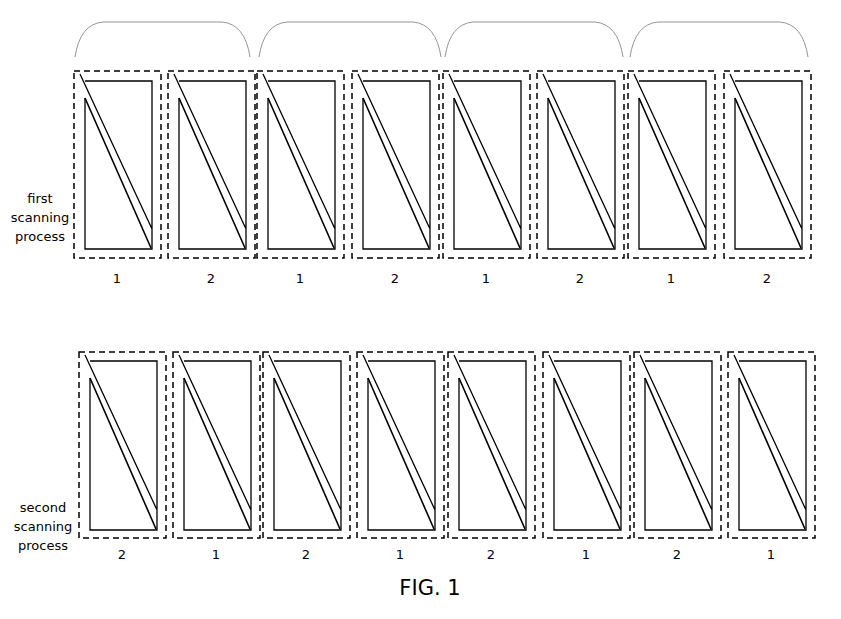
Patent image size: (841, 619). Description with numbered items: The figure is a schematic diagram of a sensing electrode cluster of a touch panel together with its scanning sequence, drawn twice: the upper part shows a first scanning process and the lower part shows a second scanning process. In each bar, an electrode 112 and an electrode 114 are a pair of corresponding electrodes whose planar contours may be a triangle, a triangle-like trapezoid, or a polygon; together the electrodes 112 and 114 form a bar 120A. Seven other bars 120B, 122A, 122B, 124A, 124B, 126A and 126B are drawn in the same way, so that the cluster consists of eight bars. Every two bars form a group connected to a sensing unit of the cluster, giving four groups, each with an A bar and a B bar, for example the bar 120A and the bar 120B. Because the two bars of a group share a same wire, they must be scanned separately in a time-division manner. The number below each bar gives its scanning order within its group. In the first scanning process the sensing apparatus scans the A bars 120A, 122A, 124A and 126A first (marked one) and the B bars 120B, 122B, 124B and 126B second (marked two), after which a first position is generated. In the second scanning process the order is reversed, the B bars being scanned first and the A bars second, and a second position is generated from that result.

The electrode 112 is at (80, 353).
The electrode 114 is at (90, 408).
The bar 120A is at (105, 352).
The bar 120B is at (199, 352).
The bar 122A is at (289, 352).
The bar 122B is at (383, 352).
The bar 124A is at (474, 352).
The bar 124B is at (569, 352).
The bar 126A is at (660, 352).
The bar 126B is at (754, 352).